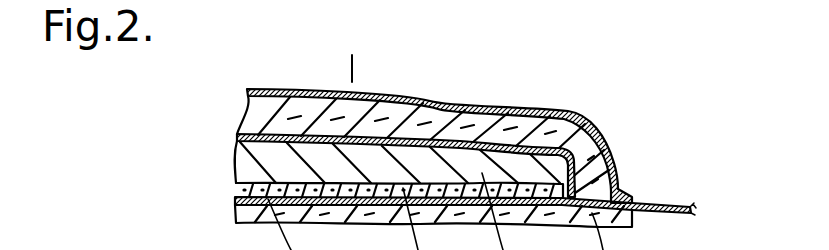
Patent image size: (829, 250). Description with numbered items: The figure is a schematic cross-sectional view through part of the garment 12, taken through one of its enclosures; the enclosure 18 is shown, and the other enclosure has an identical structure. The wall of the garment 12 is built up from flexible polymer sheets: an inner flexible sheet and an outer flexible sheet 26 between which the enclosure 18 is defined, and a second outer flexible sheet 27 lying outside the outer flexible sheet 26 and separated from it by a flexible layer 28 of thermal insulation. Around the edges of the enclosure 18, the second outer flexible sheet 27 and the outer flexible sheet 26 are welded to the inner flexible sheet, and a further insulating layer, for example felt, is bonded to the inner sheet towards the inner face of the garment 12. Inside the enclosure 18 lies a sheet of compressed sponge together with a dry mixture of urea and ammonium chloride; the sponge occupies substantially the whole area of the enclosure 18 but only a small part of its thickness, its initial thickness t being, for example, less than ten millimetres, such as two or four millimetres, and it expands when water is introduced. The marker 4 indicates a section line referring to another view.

The garment 12 is at (608, 85).
The second outer flexible sheet 27 is at (247, 90).
The outer flexible sheet 26 is at (237, 135).
The flexible layer of thermal insulation 28 is at (440, 114).
The enclosure 18 is at (245, 167).
The initial thickness t is at (218, 198).
The section line 4 is at (362, 70).